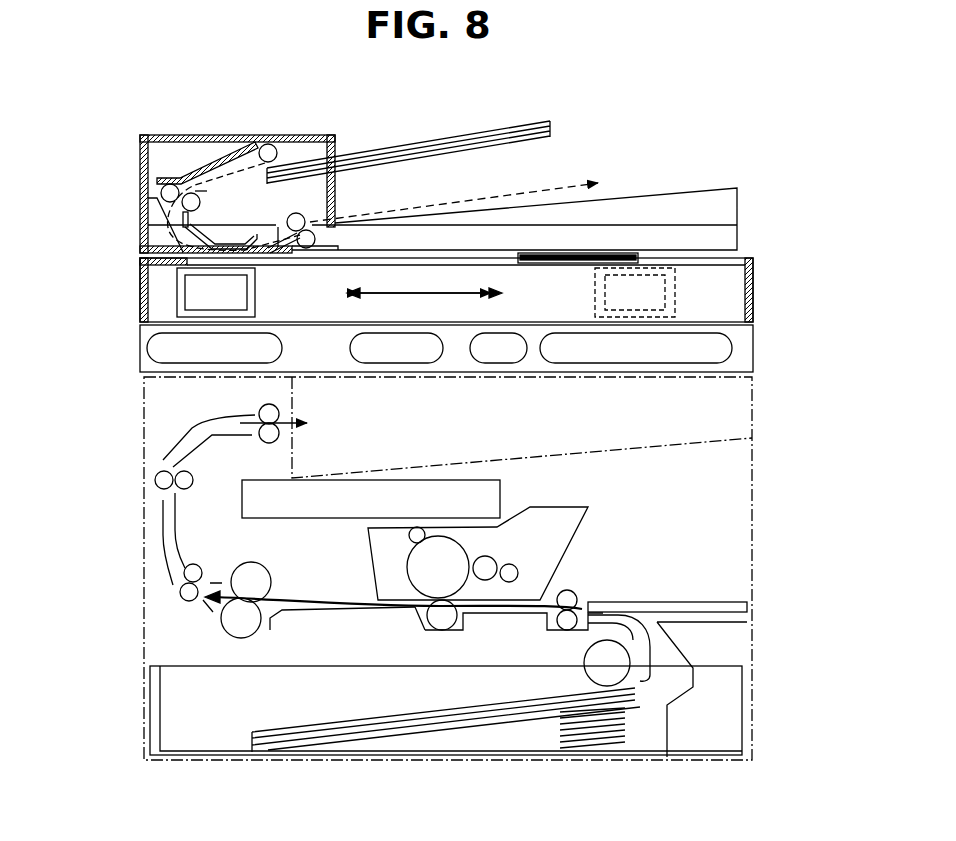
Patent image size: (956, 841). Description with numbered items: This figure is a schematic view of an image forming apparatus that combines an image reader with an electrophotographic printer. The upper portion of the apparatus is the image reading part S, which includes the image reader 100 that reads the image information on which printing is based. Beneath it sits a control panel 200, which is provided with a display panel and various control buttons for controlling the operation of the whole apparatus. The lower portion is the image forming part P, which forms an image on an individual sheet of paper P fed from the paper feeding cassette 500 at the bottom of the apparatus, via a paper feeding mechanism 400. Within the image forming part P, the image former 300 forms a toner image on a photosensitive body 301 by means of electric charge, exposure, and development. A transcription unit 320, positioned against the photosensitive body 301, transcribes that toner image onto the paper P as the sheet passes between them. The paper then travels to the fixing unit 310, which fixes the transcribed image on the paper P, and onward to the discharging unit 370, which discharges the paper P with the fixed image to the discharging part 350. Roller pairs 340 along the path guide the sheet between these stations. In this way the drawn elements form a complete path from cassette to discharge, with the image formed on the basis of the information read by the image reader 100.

The image reader 100 is at (583, 166).
The control panel 200 is at (157, 351).
The image former 300 is at (127, 586).
The photosensitive body 301 is at (407, 567).
The fixing unit 310 is at (592, 507).
The transcription unit 320 is at (440, 640).
The fusing rollers 340 is at (210, 630).
The discharging part 350 is at (500, 465).
The discharging unit 370 is at (174, 426).
The paper feeding mechanism 400 is at (127, 653).
The paper feeding cassette 500 is at (127, 708).
The image forming part P is at (330, 718).
The image reading part S is at (767, 150).